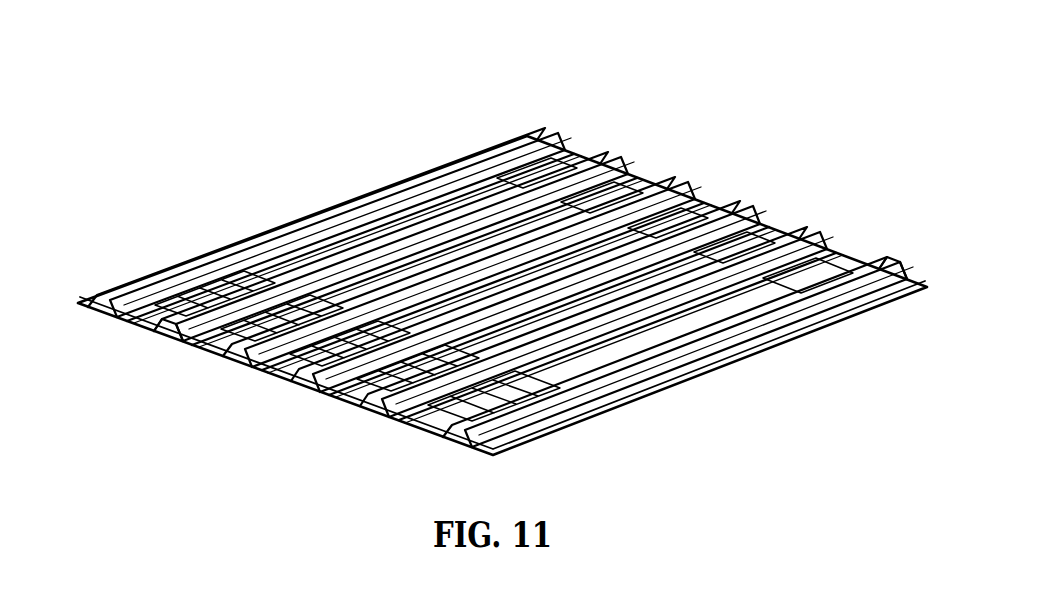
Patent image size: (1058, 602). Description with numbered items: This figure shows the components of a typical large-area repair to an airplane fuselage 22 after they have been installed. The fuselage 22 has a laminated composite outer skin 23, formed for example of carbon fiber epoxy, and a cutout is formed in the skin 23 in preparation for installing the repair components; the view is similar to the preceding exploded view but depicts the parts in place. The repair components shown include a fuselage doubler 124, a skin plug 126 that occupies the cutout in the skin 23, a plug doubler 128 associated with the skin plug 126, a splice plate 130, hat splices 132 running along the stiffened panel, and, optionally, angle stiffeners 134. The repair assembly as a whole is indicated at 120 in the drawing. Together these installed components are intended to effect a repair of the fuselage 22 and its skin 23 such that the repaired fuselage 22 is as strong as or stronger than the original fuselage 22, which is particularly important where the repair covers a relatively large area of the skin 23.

The fuselage 22 is at (121, 273).
The laminated composite outer skin 23 is at (424, 426).
The corrugated panel 120 is at (708, 114).
The fuselage doubler 124 is at (745, 247).
The skin plug 126 is at (307, 347).
The plug doubler 128 is at (511, 226).
The splice plate 130 is at (579, 198).
The hat splices 132 is at (347, 386).
The angle stiffeners 134 is at (226, 320).